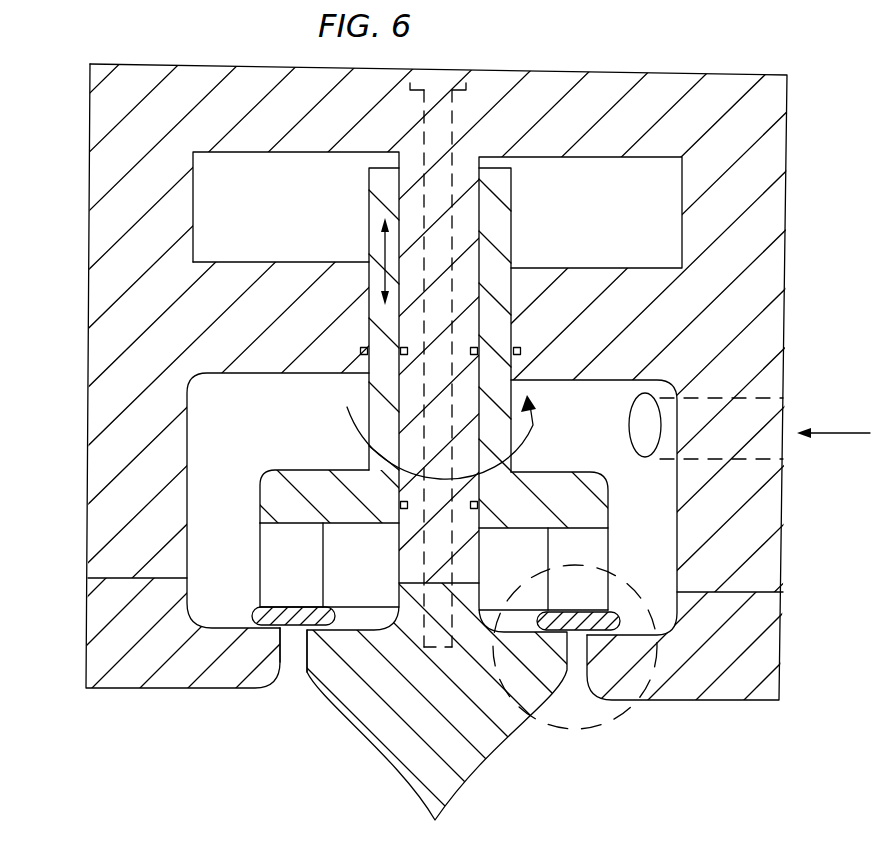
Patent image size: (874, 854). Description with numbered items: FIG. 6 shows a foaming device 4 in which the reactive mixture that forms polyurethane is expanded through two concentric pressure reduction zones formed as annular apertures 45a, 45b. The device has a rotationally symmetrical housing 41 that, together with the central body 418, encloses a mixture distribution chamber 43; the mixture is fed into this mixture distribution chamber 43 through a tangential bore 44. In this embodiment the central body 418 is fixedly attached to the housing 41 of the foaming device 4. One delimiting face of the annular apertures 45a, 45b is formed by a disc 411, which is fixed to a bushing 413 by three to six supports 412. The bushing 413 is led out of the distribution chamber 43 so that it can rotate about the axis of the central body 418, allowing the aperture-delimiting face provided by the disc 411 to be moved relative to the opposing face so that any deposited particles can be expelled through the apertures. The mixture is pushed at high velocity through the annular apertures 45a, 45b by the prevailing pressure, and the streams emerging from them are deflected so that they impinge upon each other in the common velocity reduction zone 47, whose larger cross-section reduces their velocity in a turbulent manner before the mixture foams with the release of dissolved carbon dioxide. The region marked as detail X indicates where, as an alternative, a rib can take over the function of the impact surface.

The foaming device 4 is at (802, 186).
The housing 41 is at (773, 303).
The mixture distribution chamber 43 is at (222, 534).
The tangential bore 44 is at (773, 422).
The supports 412 is at (472, 232).
The bushing 413 is at (558, 478).
The disc 411 is at (617, 610).
The annular aperture 45a is at (268, 630).
The annular aperture 45b is at (314, 633).
The velocity reduction zone 47 is at (291, 648).
The central body 418 is at (477, 738).
The detail X is at (603, 725).